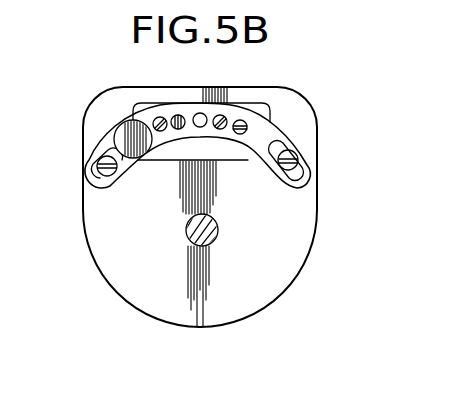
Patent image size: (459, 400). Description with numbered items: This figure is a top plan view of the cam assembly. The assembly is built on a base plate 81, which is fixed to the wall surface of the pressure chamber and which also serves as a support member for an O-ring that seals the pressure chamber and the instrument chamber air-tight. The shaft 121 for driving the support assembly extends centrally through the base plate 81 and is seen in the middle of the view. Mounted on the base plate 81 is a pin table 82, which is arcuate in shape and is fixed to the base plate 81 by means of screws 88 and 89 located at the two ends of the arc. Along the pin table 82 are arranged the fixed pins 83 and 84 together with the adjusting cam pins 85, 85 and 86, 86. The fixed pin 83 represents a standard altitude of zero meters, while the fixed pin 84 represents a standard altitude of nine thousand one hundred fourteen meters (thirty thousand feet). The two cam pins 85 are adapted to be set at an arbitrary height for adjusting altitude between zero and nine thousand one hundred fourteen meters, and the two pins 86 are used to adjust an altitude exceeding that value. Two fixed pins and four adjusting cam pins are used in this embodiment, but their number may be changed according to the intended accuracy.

The base plate 81 is at (307, 121).
The pin table 82 is at (256, 143).
The fixed pin 83 is at (122, 136).
The fixed pin 84 is at (200, 113).
The adjusting cam pins 85 is at (178, 115).
The adjusting cam pins 86 is at (240, 120).
The screw 88 is at (92, 158).
The screw 89 is at (300, 167).
The shaft 121 is at (186, 230).